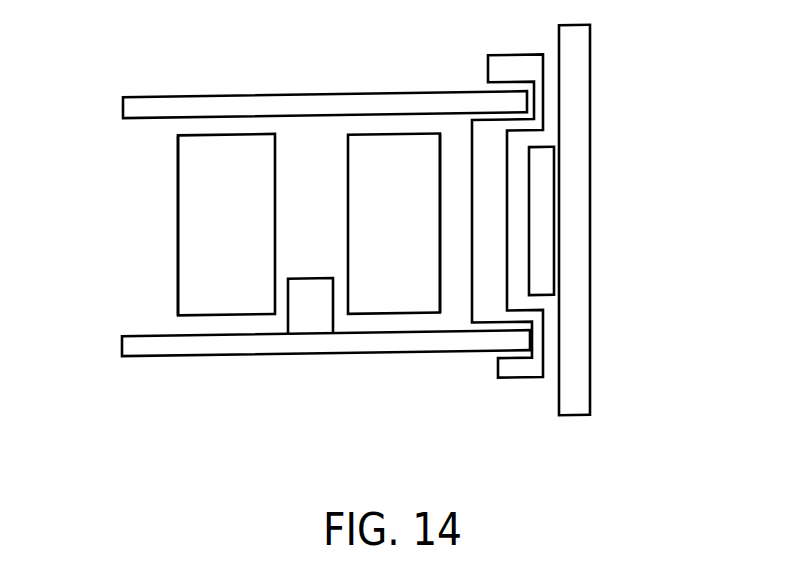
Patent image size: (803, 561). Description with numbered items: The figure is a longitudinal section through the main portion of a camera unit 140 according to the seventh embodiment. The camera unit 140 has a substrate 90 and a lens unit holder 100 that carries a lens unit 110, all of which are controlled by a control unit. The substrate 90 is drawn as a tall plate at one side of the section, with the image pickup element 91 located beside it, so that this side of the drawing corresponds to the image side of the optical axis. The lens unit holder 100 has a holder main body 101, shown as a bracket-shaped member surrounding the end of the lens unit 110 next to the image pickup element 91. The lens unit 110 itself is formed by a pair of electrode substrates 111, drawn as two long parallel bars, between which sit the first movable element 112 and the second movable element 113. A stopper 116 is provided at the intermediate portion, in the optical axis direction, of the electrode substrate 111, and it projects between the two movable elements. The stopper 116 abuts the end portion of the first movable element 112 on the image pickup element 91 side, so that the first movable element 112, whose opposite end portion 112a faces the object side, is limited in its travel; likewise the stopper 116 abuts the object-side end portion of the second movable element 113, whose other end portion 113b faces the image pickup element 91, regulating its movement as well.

The substrate 90 is at (575, 30).
The image pickup element 91 is at (517, 250).
The lens unit holder 100 is at (555, 245).
The holder main body 101 is at (490, 160).
The lens unit 110 is at (290, 228).
The electrode substrate 111 is at (123, 108).
The first movable element 112 is at (228, 138).
The side face of first electrode block 112a is at (178, 225).
The second movable element 113 is at (362, 138).
The side face of second electrode block 113b is at (442, 186).
The stopper 116 is at (298, 324).
The camera unit 140 is at (591, 219).